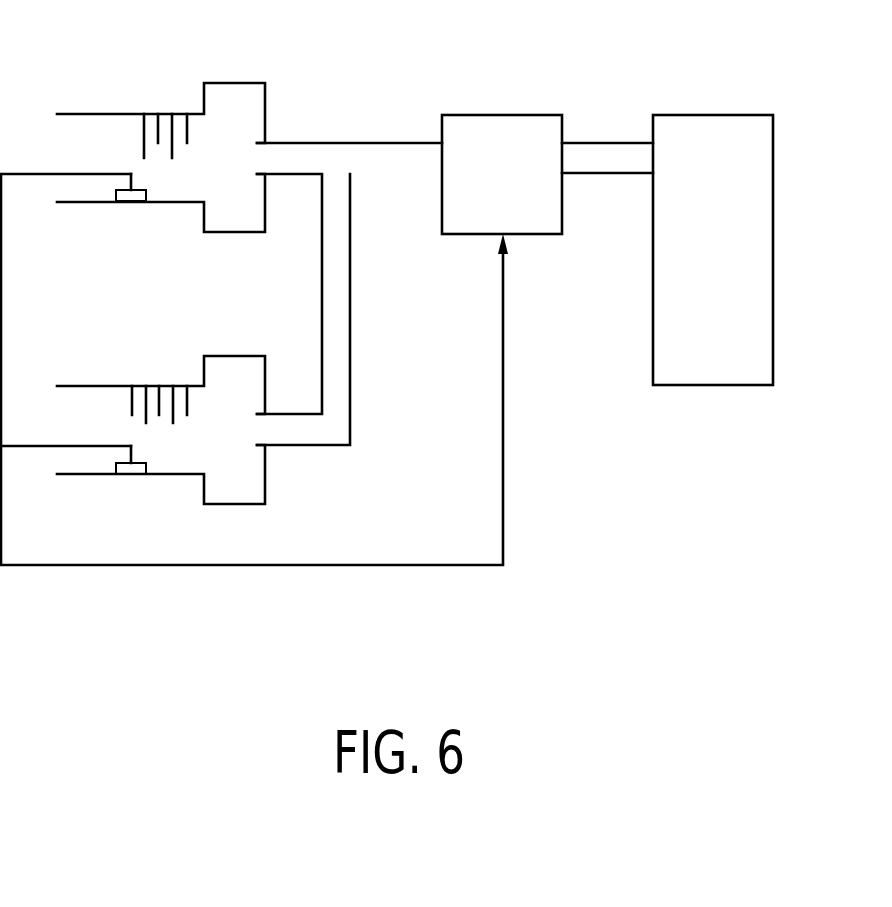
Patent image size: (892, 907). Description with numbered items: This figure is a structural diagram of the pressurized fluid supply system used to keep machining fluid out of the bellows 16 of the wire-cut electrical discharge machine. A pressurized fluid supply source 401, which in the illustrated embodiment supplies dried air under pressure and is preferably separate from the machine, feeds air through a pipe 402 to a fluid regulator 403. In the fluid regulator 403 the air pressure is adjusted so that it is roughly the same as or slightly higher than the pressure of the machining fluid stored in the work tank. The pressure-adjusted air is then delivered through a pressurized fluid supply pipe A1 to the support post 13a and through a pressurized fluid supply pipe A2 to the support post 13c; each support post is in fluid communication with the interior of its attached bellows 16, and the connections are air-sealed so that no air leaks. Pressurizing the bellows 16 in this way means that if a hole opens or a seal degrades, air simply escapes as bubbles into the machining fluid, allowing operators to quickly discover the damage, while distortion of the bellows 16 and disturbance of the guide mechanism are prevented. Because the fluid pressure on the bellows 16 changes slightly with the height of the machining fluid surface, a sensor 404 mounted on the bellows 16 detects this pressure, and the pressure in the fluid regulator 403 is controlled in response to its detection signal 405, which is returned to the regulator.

The support post 13a is at (228, 83).
The support post 13c is at (230, 356).
The bellows 16 is at (105, 114).
The sensor 404 is at (127, 201).
The pressurized fluid supply pipe A1 is at (310, 142).
The pressurized fluid supply pipe A2 is at (283, 447).
The detection signal 405 is at (285, 567).
The fluid regulator 403 is at (502, 115).
The pipe 402 is at (593, 140).
The pressurized fluid supply source 401 is at (719, 113).